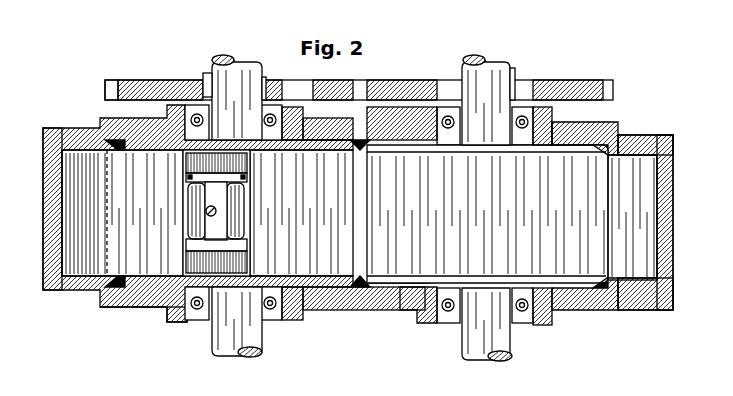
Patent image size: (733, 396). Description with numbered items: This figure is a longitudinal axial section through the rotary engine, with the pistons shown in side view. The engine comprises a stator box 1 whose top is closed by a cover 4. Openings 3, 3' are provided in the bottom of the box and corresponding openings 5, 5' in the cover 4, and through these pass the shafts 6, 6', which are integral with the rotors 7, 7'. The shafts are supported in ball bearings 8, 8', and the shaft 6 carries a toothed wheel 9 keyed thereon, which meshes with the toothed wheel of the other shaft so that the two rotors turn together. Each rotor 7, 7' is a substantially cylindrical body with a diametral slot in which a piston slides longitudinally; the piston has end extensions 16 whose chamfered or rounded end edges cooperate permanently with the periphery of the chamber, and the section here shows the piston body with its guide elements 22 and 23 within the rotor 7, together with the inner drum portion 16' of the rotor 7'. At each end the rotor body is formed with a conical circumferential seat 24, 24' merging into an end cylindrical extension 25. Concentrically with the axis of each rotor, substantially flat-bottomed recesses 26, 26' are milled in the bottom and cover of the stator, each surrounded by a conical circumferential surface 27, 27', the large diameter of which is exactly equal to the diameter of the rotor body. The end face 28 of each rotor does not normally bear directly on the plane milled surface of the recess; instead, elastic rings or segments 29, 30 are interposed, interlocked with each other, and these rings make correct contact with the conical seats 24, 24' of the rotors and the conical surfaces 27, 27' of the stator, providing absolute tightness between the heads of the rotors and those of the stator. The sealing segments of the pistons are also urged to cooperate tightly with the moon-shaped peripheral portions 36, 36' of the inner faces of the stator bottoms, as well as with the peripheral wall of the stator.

The box 1 is at (666, 228).
The opening 3 is at (196, 316).
The opening 3' is at (522, 316).
The cover 4 is at (88, 134).
The opening 5 is at (243, 97).
The opening 5' is at (515, 100).
The shaft 6 is at (248, 322).
The shaft 6' is at (476, 324).
The rotor 7 is at (328, 120).
The rotor 7' is at (530, 214).
The ball bearing 8 is at (159, 211).
The ball bearing 8' is at (553, 221).
The toothed wheel 9 is at (110, 85).
The end extension 16 is at (207, 233).
The inner drum 16' is at (654, 213).
The pin 22 is at (217, 214).
The carrier 23 is at (187, 229).
The conical circumferential seat 24 is at (398, 303).
The conical circumferential seat 24' is at (593, 129).
The end cylindrical extension 25 is at (408, 150).
The recess 26 is at (133, 203).
The recess 26' is at (585, 218).
The conical circumferential surface 27 is at (101, 219).
The conical circumferential surface 27' is at (645, 214).
The end face 28 is at (323, 137).
The elastic ring 29 is at (360, 138).
The elastic ring 30 is at (360, 314).
The moon-shaped peripheral portion 36 is at (55, 212).
The moon-shaped peripheral portion 36' is at (678, 219).